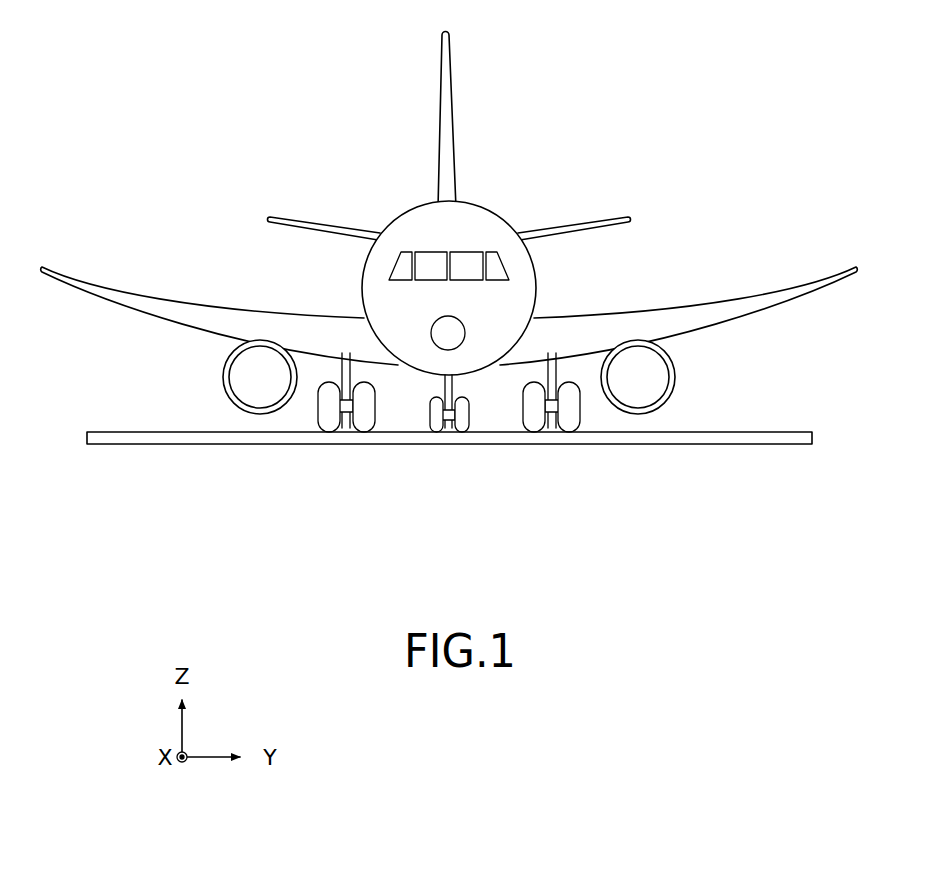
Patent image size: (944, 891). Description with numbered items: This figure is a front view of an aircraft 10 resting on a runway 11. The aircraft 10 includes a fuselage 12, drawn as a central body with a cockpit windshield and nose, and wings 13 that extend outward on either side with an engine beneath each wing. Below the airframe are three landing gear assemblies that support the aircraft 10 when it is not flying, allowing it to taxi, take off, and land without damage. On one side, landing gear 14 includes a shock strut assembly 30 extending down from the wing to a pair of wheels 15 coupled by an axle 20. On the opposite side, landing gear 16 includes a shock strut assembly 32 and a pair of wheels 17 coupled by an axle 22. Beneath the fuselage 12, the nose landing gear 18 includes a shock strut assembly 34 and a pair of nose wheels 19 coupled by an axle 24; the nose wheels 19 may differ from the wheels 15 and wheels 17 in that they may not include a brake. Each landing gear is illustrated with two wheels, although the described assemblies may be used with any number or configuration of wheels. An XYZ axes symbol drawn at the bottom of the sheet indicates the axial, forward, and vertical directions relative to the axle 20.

The aircraft 10 is at (284, 113).
The runway 11 is at (753, 433).
The fuselage 12 is at (476, 226).
The wings 13 is at (98, 290).
The landing gear 14 is at (602, 416).
The wheels 15 is at (532, 418).
The landing gear 16 is at (294, 416).
The wheels 17 is at (320, 420).
The landing gear 18 is at (489, 390).
The nose wheels 19 is at (435, 423).
The axle 20 is at (552, 423).
The axle 22 is at (347, 420).
The axle 24 is at (438, 420).
The shock strut assembly 30 is at (555, 386).
The shock strut assembly 32 is at (345, 370).
The shock strut assembly 34 is at (446, 393).